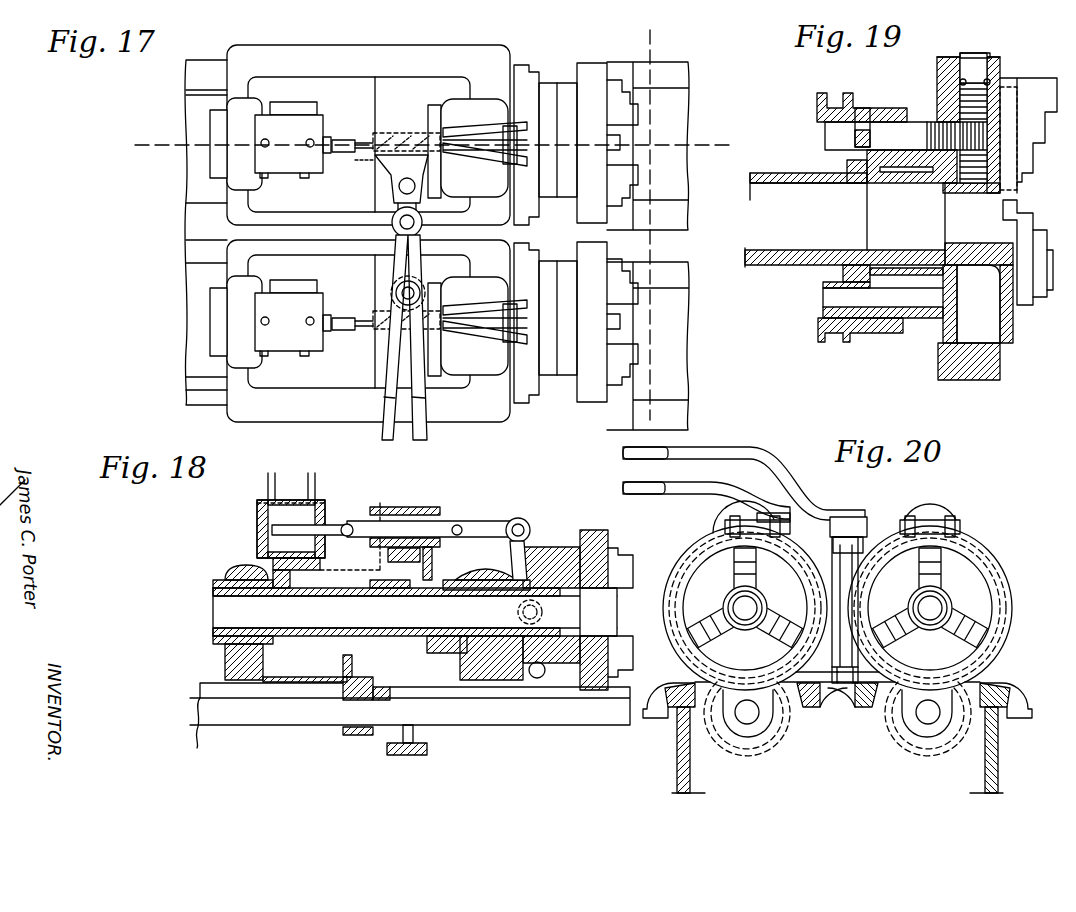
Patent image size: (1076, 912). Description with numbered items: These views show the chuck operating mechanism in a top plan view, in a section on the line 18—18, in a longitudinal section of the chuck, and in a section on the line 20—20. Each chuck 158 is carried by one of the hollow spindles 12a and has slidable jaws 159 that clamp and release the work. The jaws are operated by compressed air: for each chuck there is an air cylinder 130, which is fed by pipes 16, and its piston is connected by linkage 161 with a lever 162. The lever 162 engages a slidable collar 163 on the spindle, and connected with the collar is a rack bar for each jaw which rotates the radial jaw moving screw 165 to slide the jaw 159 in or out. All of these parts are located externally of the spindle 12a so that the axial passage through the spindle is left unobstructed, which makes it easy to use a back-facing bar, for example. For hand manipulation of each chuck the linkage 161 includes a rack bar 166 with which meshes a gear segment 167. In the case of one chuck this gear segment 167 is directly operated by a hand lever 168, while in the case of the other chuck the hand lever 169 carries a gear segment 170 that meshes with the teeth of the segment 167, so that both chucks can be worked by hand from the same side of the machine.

In FIG. 18, the spindle 12a is at (452, 623).
In FIG. 19, the spindle 12a is at (836, 223).
In FIG. 20, the spindle 12a is at (738, 608).
In FIG. 19, the pipe 16 is at (963, 103).
In FIG. 17, the section line 18- 18 is at (426, 145).
In FIG. 17, the section line 20- 20 is at (663, 224).
In FIG. 17, the air cylinder 130 is at (325, 233).
In FIG. 18, the air cylinder 130 is at (318, 523).
In FIG. 20, the air cylinder 130 is at (722, 520).
In FIG. 17, the chuck 158 is at (578, 75).
In FIG. 18, the chuck 158 is at (594, 600).
In FIG. 20, the chuck 158 is at (826, 558).
In FIG. 17, the slidable jaws 159 is at (628, 100).
In FIG. 18, the slidable jaws 159 is at (625, 556).
In FIG. 19, the slidable jaws 159 is at (1043, 162).
In FIG. 20, the slidable jaws 159 is at (955, 585).
In FIG. 18, the linkage 161 is at (431, 518).
In FIG. 18, the lever 162 is at (523, 525).
In FIG. 19, the slidable collar 163 is at (818, 99).
In FIG. 19, the radial jaw moving screw 165 is at (1000, 62).
In FIG. 17, the rack bar 166 is at (367, 152).
In FIG. 17, the gear segment 167 is at (401, 179).
In FIG. 17, the hand lever 168 is at (426, 423).
In FIG. 20, the hand lever 168 is at (716, 484).
In FIG. 17, the hand lever 169 is at (398, 283).
In FIG. 19, the hand lever 169 is at (883, 148).
In FIG. 20, the hand lever 169 is at (746, 447).
In FIG. 17, the gear segment 170 is at (392, 215).